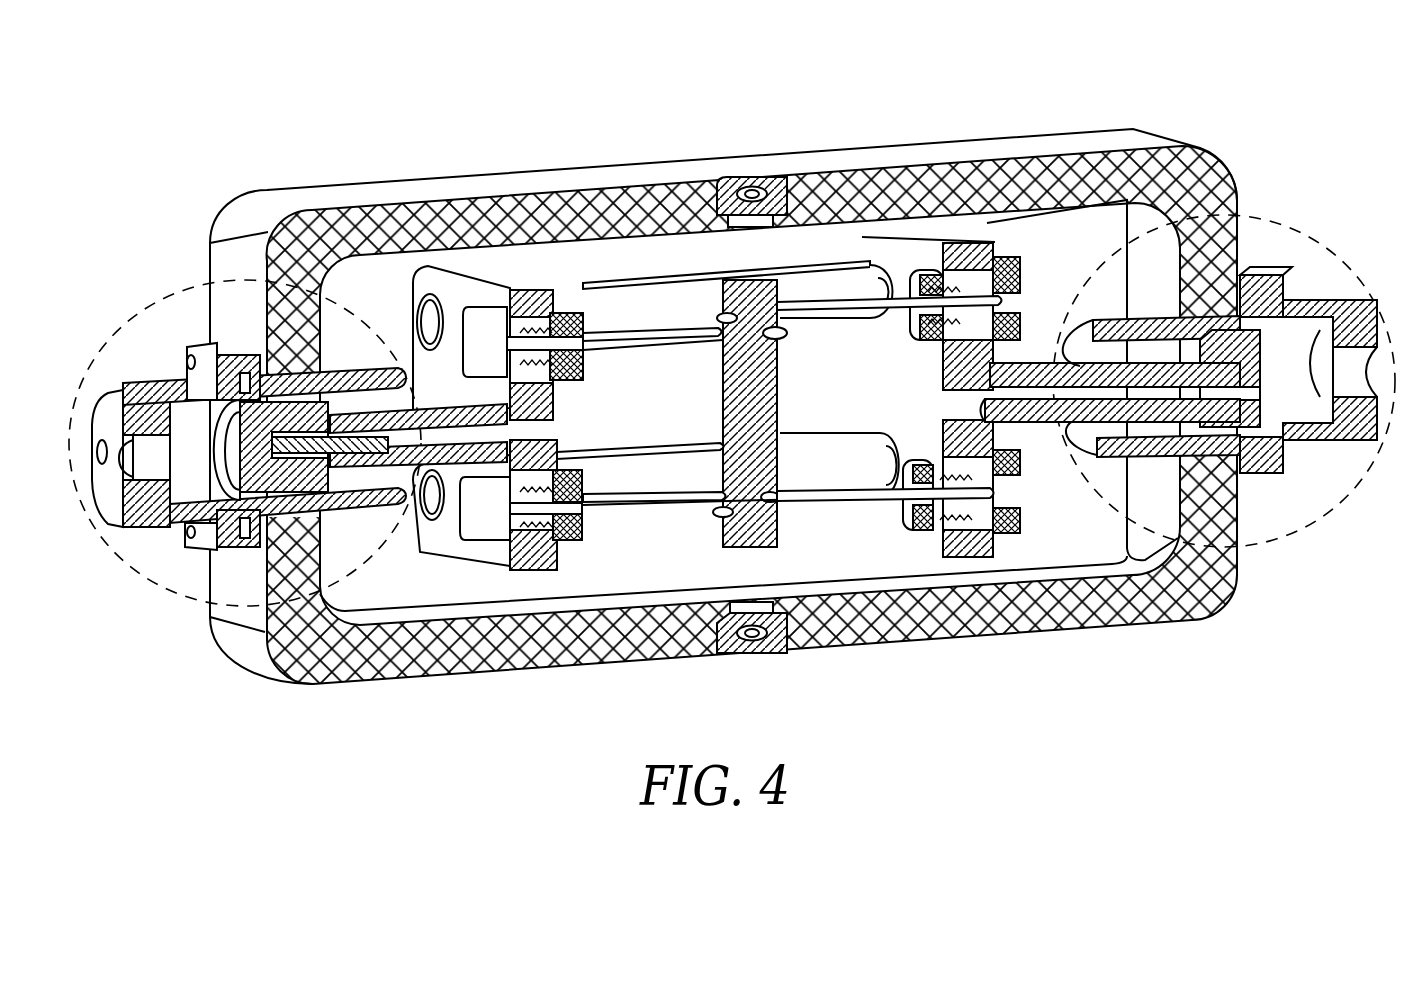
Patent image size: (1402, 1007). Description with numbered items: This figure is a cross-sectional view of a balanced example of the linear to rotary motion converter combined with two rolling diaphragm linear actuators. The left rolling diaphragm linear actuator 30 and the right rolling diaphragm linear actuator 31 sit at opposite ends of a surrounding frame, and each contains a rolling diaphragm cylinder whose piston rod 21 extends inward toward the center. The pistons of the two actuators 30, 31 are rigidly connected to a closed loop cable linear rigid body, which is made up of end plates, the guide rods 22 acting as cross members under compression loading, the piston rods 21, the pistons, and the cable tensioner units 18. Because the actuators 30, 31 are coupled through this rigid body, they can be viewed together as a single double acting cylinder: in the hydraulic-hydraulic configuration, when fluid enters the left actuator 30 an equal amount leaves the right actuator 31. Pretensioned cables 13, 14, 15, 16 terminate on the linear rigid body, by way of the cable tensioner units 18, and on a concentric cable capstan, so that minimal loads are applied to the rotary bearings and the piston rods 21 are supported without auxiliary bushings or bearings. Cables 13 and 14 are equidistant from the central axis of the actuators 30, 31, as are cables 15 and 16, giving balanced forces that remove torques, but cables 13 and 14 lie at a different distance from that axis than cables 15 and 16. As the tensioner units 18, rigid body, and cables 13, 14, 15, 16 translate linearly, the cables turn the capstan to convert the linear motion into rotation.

The pretensioned cable 13 is at (692, 500).
The pretensioned cable 14 is at (610, 338).
The pretensioned cable 15 is at (820, 312).
The pretensioned cable 16 is at (832, 500).
The cable tensioner unit 18 is at (480, 347).
The piston rod 21 is at (1082, 404).
The guide rod 22 is at (675, 303).
The left rolling diaphragm linear actuator 30 is at (118, 331).
The right rolling diaphragm linear actuator 31 is at (1330, 240).